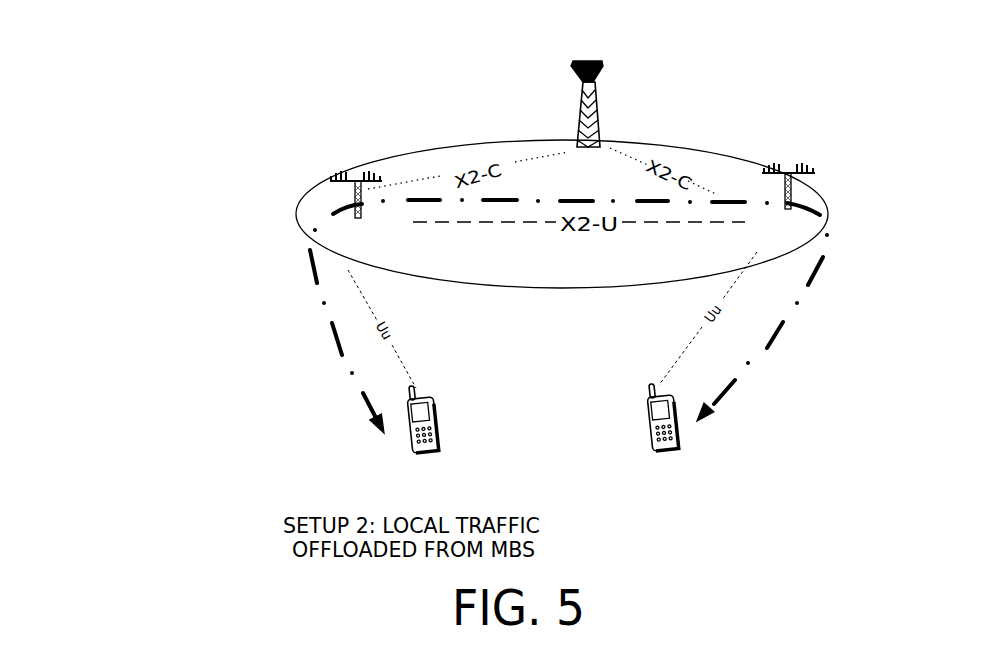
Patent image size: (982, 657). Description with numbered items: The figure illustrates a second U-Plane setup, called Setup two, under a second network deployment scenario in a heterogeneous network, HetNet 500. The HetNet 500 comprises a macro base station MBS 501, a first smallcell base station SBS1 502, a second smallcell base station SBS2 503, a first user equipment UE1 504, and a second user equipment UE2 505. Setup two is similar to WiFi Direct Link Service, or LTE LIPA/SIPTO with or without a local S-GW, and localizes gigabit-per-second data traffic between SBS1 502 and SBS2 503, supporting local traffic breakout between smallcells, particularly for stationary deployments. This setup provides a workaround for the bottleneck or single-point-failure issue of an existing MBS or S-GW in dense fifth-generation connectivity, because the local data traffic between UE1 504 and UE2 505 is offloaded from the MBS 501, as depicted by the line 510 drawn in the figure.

The HetNet 500 is at (181, 67).
The macro base station MBS 501 is at (597, 58).
The first smallcell base station SBS1 502 is at (355, 176).
The second smallcell base station SBS2 503 is at (790, 167).
The first UE1 504 is at (436, 406).
The second UE2 505 is at (653, 388).
The line 510 is at (770, 344).